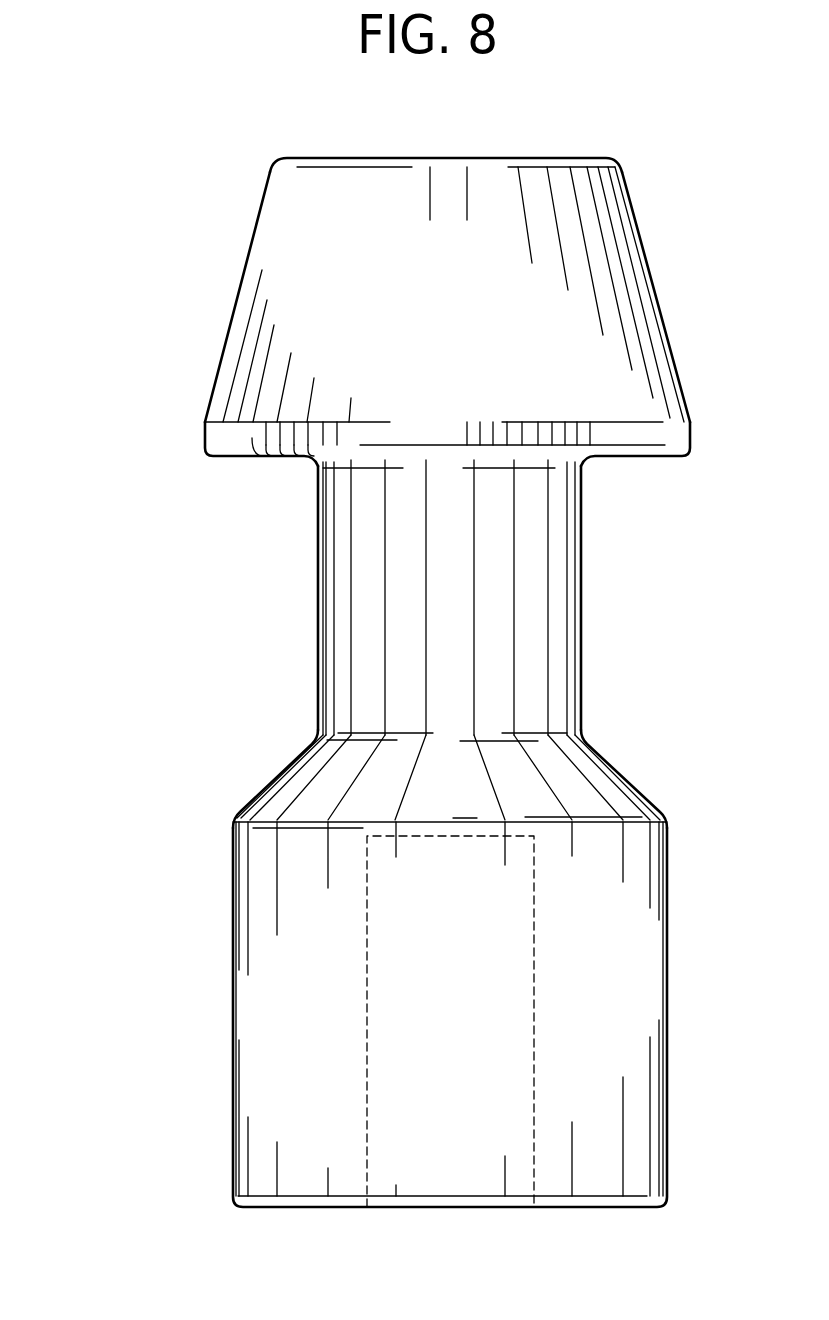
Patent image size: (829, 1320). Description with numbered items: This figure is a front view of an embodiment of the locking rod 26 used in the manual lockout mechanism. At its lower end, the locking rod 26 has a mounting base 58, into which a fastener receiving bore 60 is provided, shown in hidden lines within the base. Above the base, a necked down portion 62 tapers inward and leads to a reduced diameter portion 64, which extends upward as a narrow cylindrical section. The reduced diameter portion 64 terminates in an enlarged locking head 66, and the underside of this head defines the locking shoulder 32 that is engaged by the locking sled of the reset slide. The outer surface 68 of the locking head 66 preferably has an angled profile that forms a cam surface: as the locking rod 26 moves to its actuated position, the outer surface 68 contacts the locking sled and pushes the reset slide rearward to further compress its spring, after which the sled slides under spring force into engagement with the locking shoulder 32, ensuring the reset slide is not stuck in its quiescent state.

The locking rod 26 is at (146, 146).
The locking head 66 is at (341, 182).
The outer surface 68 is at (657, 291).
The locking shoulder 32 is at (242, 458).
The reduced diameter portion 64 is at (362, 580).
The necked down portion 62 is at (597, 780).
The mounting base 58 is at (645, 1005).
The fastener receiving bore 60 is at (438, 1143).